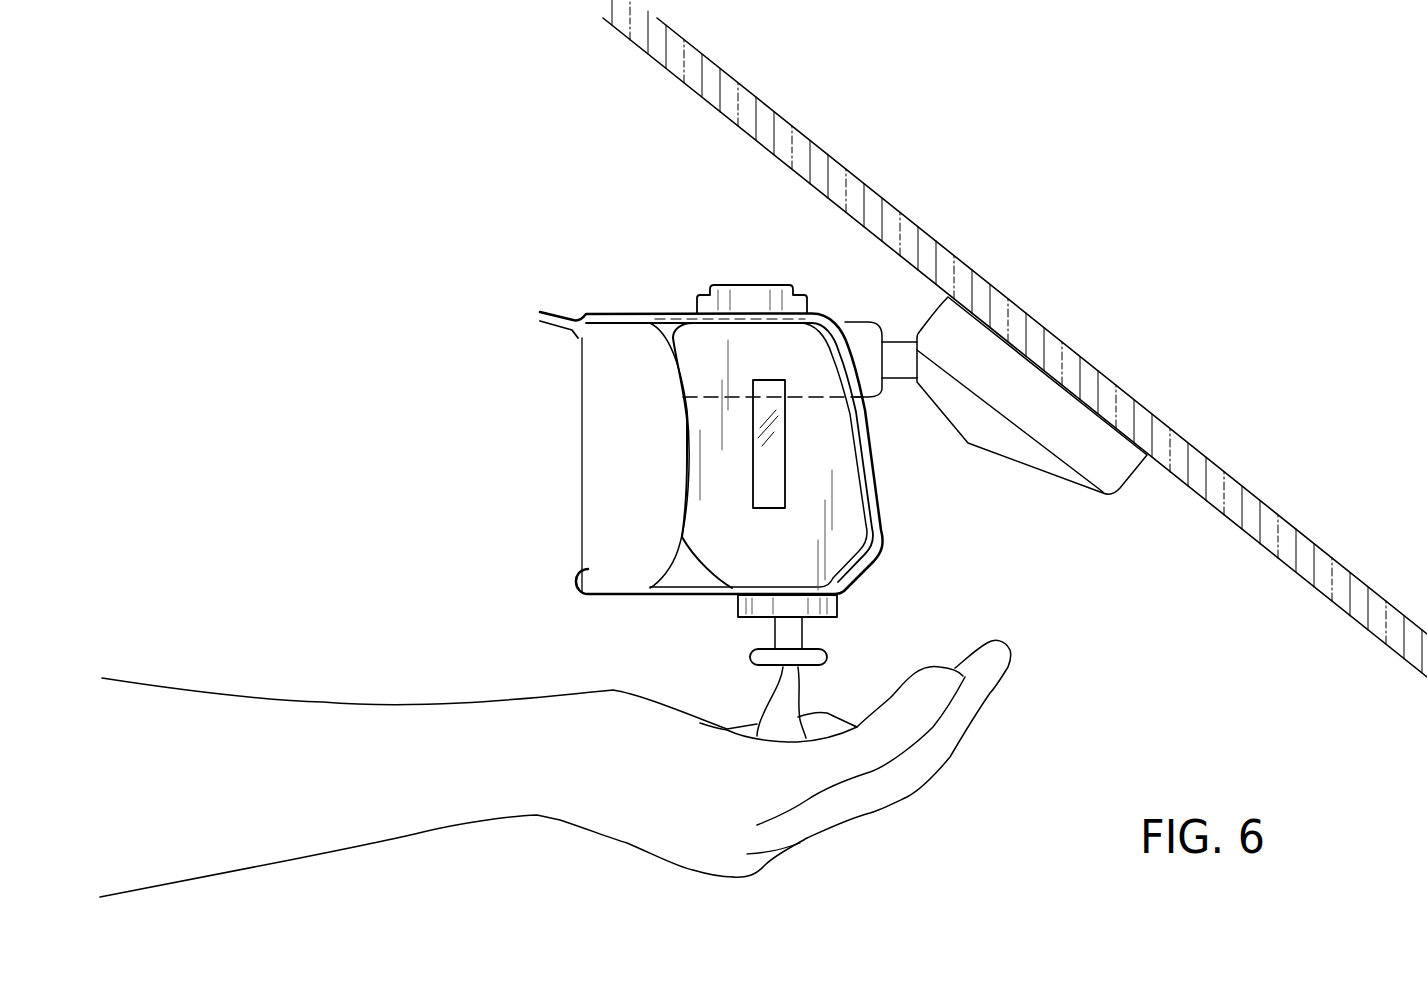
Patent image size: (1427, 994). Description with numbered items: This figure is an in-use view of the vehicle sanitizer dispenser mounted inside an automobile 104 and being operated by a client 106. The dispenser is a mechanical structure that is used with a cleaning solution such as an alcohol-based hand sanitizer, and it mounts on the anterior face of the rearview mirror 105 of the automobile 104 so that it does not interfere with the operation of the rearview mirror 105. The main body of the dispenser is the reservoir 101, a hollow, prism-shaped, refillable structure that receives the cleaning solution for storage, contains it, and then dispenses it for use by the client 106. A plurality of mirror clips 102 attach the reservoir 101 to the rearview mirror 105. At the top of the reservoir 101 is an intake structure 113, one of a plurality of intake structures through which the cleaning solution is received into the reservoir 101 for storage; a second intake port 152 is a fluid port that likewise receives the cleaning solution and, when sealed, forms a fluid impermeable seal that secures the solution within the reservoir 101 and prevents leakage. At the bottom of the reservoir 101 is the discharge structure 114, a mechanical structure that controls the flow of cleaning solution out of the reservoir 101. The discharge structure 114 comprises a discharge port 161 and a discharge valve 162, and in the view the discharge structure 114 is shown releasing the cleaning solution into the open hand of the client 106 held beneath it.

The reservoir 101 is at (853, 552).
The mirror clip 102 is at (883, 533).
The automobile 104 is at (1272, 513).
The rearview mirror 105 is at (1035, 395).
The client 106 is at (610, 818).
The intake structure 113 is at (745, 298).
The discharge structure 114 is at (730, 623).
The second intake port 152 is at (771, 472).
The discharge port 161 is at (838, 607).
The discharge valve 162 is at (752, 657).